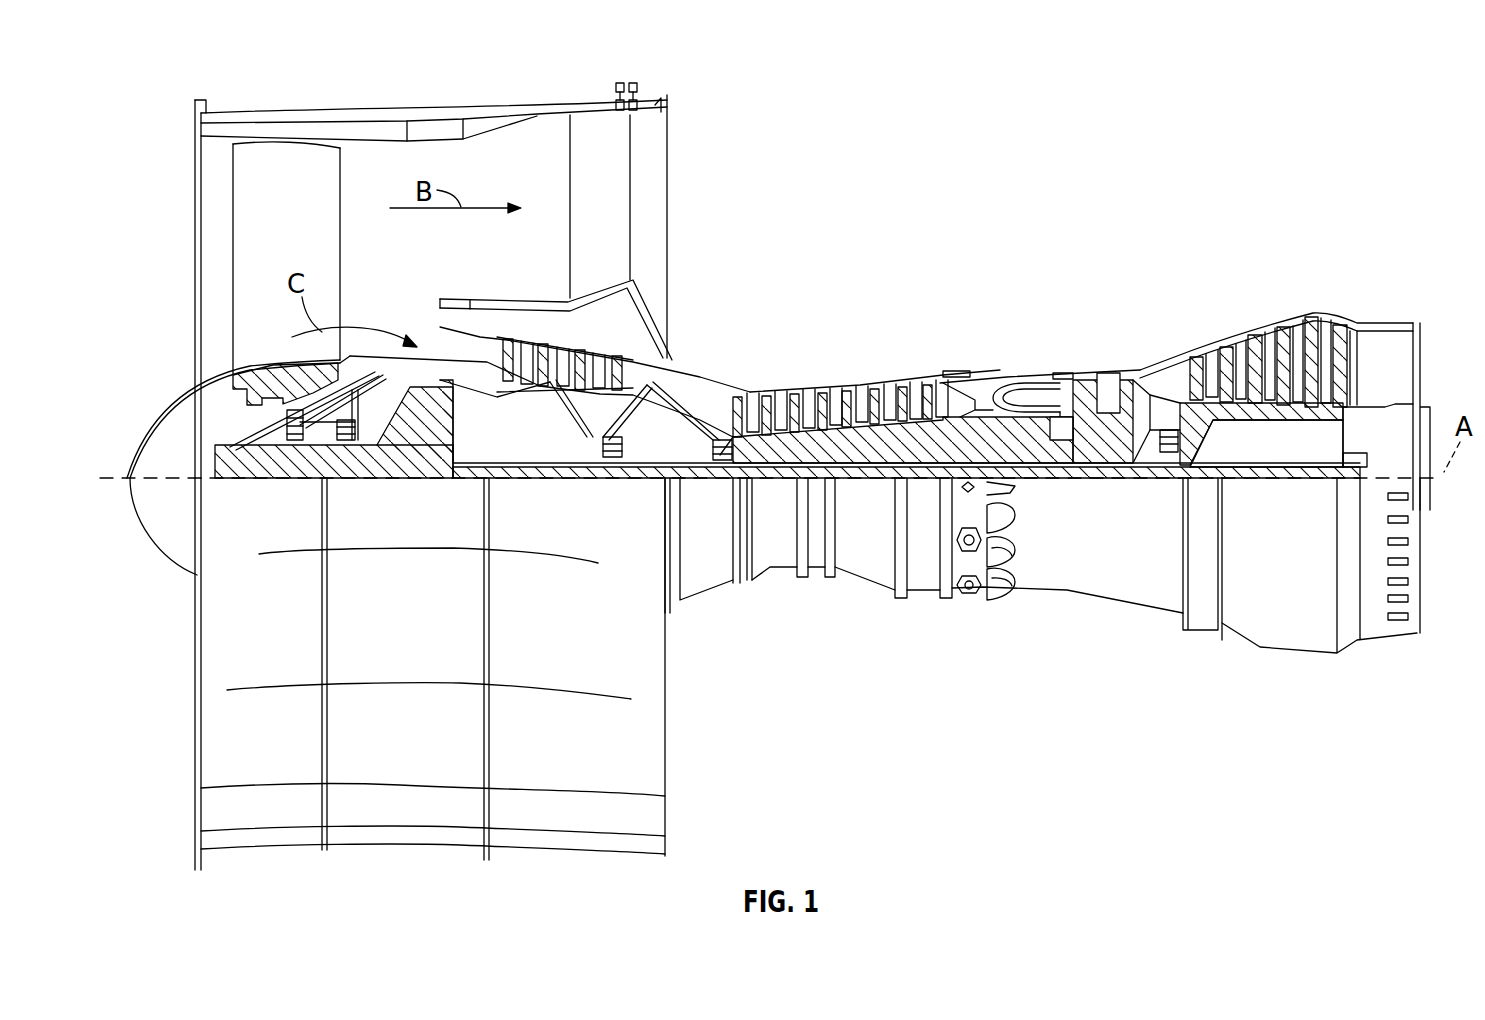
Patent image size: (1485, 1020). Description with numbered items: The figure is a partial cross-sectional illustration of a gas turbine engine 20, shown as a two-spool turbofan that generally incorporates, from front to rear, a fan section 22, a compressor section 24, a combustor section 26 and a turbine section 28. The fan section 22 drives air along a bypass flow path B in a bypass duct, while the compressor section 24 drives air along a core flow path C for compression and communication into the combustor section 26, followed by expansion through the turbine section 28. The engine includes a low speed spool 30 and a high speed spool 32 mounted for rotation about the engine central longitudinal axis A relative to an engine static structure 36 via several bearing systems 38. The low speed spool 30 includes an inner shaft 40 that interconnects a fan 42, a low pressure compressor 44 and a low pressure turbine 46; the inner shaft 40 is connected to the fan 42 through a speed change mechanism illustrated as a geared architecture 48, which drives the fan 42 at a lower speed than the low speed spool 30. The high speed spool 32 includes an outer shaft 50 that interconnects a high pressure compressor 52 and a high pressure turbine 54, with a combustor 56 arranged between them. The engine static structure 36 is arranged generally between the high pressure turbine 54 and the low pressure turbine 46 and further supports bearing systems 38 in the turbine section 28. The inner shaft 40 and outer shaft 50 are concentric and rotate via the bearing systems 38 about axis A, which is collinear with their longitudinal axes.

The gas turbine engine 20 is at (1301, 78).
The fan section 22 is at (290, 104).
The compressor section 24 is at (936, 292).
The combustor section 26 is at (998, 288).
The turbine section 28 is at (1180, 268).
The low speed spool 30 is at (883, 489).
The high speed spool 32 is at (943, 430).
The engine static structure 36 is at (924, 603).
The bearing systems 38 is at (305, 435).
The inner shaft 40 is at (712, 480).
The fan 42 is at (297, 213).
The low pressure compressor 44 is at (580, 360).
The low pressure turbine 46 is at (1264, 330).
The geared architecture 48 is at (433, 447).
The outer shaft 50 is at (1060, 479).
The high pressure compressor 52 is at (847, 445).
The high pressure turbine 54 is at (1106, 376).
The combustor 56 is at (1023, 400).